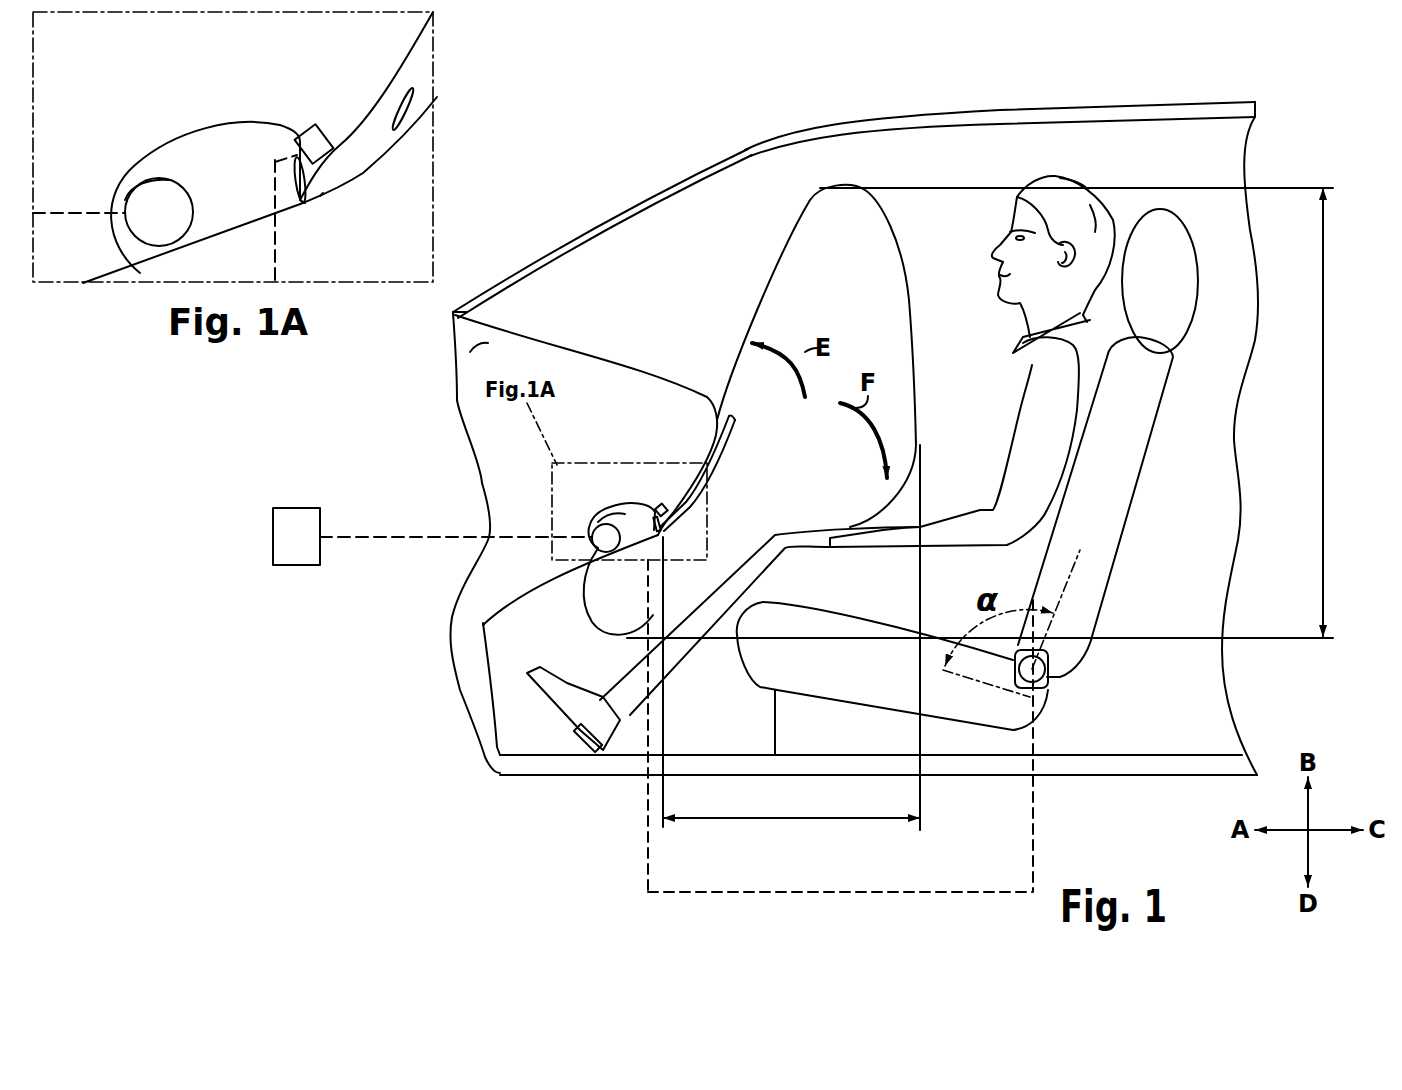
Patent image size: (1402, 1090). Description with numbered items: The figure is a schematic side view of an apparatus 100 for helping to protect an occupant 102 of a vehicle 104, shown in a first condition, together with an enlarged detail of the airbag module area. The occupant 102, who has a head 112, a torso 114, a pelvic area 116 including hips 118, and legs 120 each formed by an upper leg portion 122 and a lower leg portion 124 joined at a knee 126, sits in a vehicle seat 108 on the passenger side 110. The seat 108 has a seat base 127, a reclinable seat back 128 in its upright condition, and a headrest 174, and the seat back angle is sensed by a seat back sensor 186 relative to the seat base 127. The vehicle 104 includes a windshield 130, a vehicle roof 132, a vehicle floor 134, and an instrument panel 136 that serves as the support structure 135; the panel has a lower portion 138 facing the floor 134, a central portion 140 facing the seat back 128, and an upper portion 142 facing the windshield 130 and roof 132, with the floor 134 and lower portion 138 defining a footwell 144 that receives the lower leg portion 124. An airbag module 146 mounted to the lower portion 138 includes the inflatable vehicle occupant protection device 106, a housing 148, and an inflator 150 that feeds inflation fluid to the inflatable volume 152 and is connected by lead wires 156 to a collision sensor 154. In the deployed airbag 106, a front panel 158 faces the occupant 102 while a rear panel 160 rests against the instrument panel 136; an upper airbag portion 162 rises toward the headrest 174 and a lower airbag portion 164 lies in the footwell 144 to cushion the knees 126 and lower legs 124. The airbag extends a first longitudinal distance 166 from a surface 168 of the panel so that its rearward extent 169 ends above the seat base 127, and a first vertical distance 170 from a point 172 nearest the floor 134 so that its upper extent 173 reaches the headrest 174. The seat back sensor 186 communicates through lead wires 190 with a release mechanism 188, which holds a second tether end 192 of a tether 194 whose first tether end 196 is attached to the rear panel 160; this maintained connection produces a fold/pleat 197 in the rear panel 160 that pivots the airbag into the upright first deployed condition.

In FIG. 1, the apparatus 100 is at (1325, 113).
In FIG. 1, the occupant 102 is at (1107, 330).
In FIG. 1, the vehicle 104 is at (1228, 107).
In FIG. 1, the inflatable vehicle occupant protection device 106 is at (873, 200).
In FIG. 1, the vehicle seat 108 is at (992, 710).
In FIG. 1, the passenger side 110 is at (1205, 429).
In FIG. 1, the head 112 is at (1085, 200).
In FIG. 1, the torso 114 is at (1057, 423).
In FIG. 1, the pelvic area 116 is at (1010, 578).
In FIG. 1, the hips 118 is at (1010, 625).
In FIG. 1, the legs 120 is at (873, 600).
In FIG. 1, the upper leg portion 122 is at (810, 590).
In FIG. 1, the lower leg portion 124 is at (685, 653).
In FIG. 1, the knee 126 is at (760, 583).
In FIG. 1, the seat base 127 is at (905, 685).
In FIG. 1, the seat back 128 is at (1170, 367).
In FIG. 1, the windshield 130 is at (560, 245).
In FIG. 1, the vehicle roof 132 is at (1030, 115).
In FIG. 1, the vehicle floor 134 is at (1167, 763).
In FIG. 1, the support structure 135 is at (482, 343).
In FIG. 1, the instrument panel 136 is at (479, 347).
In FIG. 1, the lower portion 138 is at (562, 569).
In FIG. 1, the central portion 140 is at (720, 445).
In FIG. 1, the upper portion 142 is at (587, 343).
In FIG. 1, the footwell 144 is at (520, 740).
In FIG. 1A, the airbag module 146 is at (150, 150).
In FIG. 1, the airbag module 146 is at (593, 516).
In FIG. 1A, the housing 148 is at (122, 177).
In FIG. 1, the housing 148 is at (593, 535).
In FIG. 1A, the inflator 150 is at (157, 223).
In FIG. 1, the inflator 150 is at (603, 540).
In FIG. 1, the inflatable volume 152 is at (820, 193).
In FIG. 1, the collision sensor 154 is at (270, 537).
In FIG. 1, the lead wires 156 is at (460, 537).
In FIG. 1, the front panel 158 is at (904, 238).
In FIG. 1, the rear panel 160 is at (755, 290).
In FIG. 1, the upper airbag portion 162 is at (892, 329).
In FIG. 1, the lower airbag portion 164 is at (618, 614).
In FIG. 1, the first longitudinal distance 166 is at (790, 822).
In FIG. 1A, the surface 168 is at (311, 215).
In FIG. 1, the surface 168 is at (668, 539).
In FIG. 1, the rearward extent 169 is at (916, 273).
In FIG. 1, the first vertical distance 170 is at (1323, 413).
In FIG. 1, the point 172 is at (626, 646).
In FIG. 1, the upper extent 173 is at (834, 188).
In FIG. 1, the headrest 174 is at (1177, 255).
In FIG. 1, the seat back sensor 186 is at (1055, 679).
In FIG. 1A, the release mechanism 188 is at (307, 135).
In FIG. 1, the release mechanism 188 is at (660, 508).
In FIG. 1, the lead wires 190 is at (1035, 813).
In FIG. 1A, the second tether end 192 is at (362, 162).
In FIG. 1, the second tether end 192 is at (687, 498).
In FIG. 1A, the tether 194 is at (330, 193).
In FIG. 1, the tether 194 is at (682, 491).
In FIG. 1A, the first tether end 196 is at (295, 175).
In FIG. 1, the first tether end 196 is at (643, 527).
In FIG. 1, the fold/pleat 197 is at (717, 400).